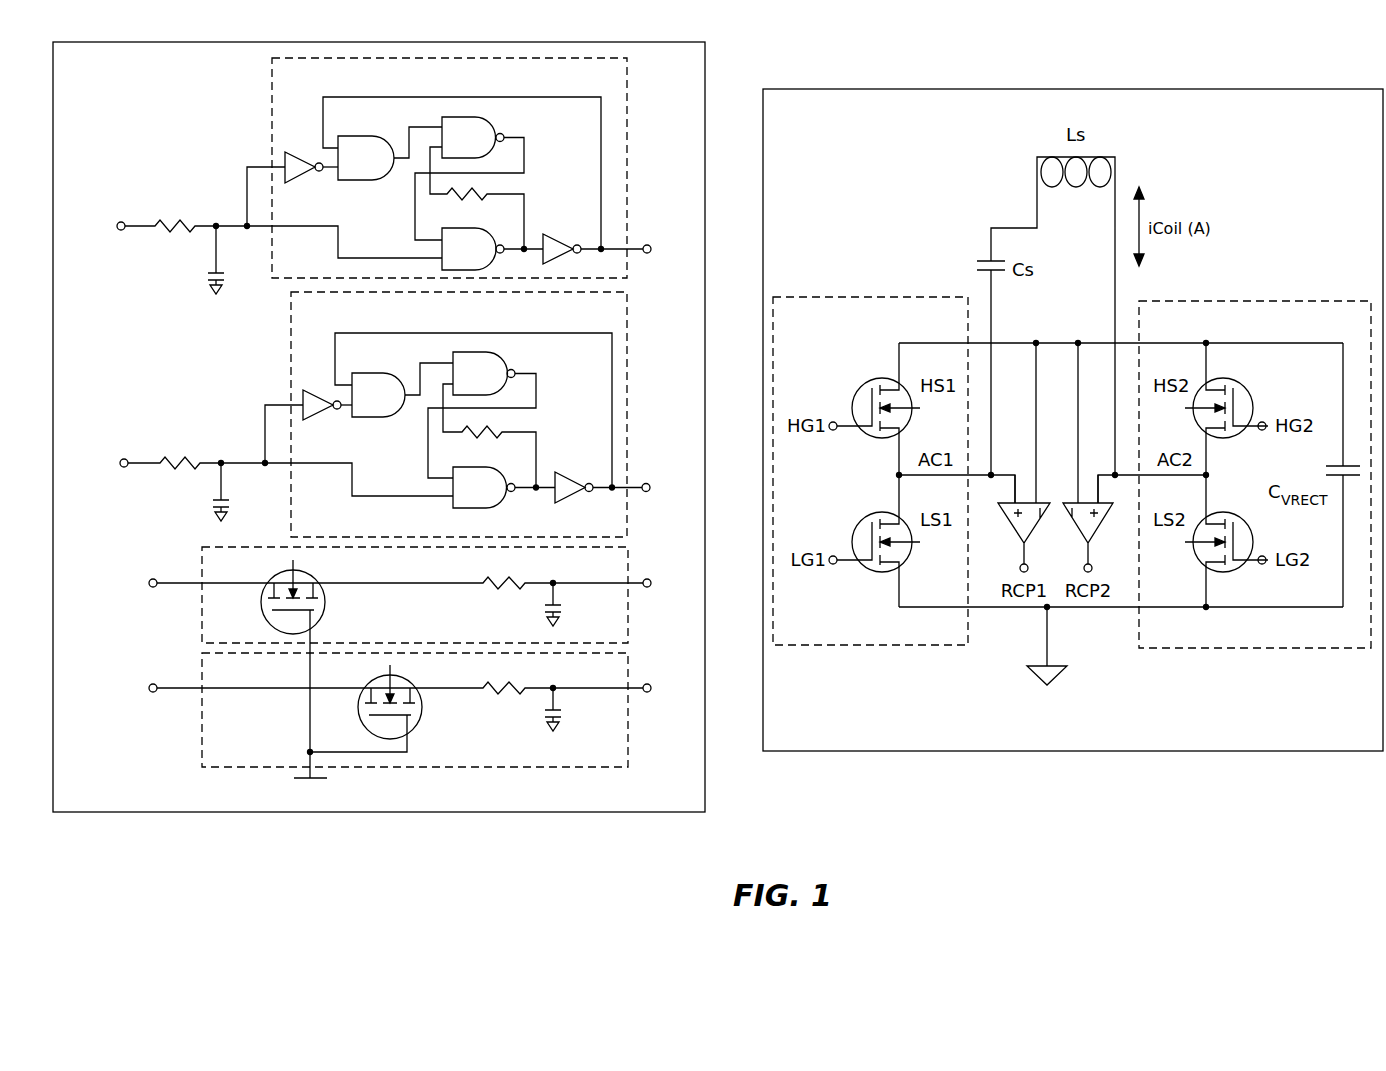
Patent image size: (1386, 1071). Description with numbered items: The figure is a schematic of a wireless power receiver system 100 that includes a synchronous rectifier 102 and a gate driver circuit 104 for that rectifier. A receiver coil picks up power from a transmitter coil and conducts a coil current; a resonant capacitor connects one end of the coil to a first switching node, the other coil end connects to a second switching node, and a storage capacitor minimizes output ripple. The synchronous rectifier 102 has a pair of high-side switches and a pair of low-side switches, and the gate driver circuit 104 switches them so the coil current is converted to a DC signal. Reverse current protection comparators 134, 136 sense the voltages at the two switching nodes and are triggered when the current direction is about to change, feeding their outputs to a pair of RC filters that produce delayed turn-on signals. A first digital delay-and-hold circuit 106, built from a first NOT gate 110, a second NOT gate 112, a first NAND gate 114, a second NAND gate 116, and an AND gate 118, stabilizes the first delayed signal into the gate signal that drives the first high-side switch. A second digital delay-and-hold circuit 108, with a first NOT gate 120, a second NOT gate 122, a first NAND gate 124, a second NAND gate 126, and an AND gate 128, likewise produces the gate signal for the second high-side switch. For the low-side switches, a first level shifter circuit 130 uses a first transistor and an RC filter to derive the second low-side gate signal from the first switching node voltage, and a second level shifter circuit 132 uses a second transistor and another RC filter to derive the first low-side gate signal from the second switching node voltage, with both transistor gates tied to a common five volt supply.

The wireless power receiver system 100 is at (817, 120).
The synchronous rectifier 102 is at (822, 330).
The gate driver circuit 104 is at (104, 83).
The first digital delay-and-hold circuit 106 is at (317, 86).
The second digital delay-and-hold circuit 108 is at (337, 320).
The first NOT gate 110 is at (303, 176).
The second NOT gate 112 is at (551, 241).
The first NAND gate 114 is at (479, 259).
The second NAND gate 116 is at (479, 147).
The AND gate 118 is at (375, 168).
The first NOT gate 120 is at (320, 413).
The second NOT gate 122 is at (566, 478).
The first NAND gate 124 is at (490, 498).
The second NAND gate 126 is at (490, 383).
The AND gate 128 is at (389, 405).
The first level shifter circuit 130 is at (245, 577).
The second level shifter circuit 132 is at (245, 683).
The RCP comparator 134 is at (1013, 527).
The RCP comparator 136 is at (1098, 527).